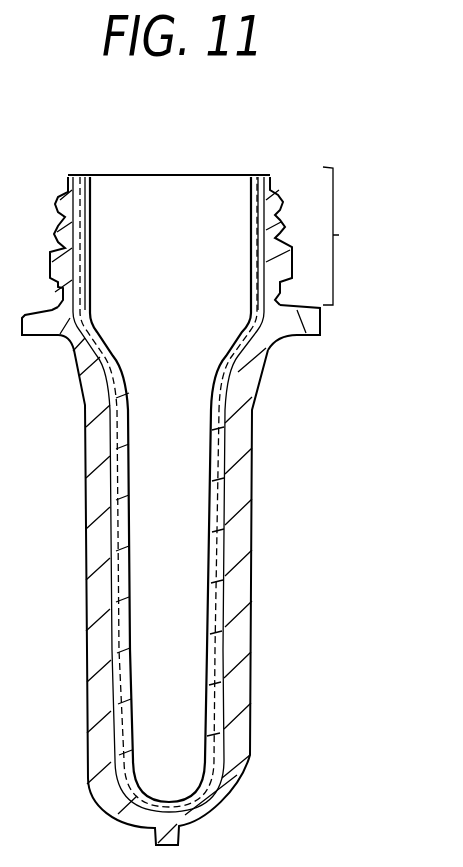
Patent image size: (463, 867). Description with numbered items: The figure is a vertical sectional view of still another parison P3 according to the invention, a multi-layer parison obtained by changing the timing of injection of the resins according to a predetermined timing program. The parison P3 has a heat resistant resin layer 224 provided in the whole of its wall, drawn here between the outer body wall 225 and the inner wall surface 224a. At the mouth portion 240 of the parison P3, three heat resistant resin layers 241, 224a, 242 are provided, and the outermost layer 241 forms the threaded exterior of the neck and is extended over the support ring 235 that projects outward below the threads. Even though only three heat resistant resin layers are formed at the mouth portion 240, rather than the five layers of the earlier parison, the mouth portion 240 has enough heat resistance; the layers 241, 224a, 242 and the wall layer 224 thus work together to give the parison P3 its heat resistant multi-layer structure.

The outer layer of preform body 225 is at (246, 525).
The heat resistant resin layer 224 is at (230, 433).
The heat resistant resin layer 224a is at (251, 270).
The heat resistant resin layer 242 is at (250, 216).
The outermost heat resistant resin layer 241 is at (275, 197).
The support flange 235 is at (308, 323).
The mouth portion 240 is at (348, 235).
The parison P3 is at (313, 380).